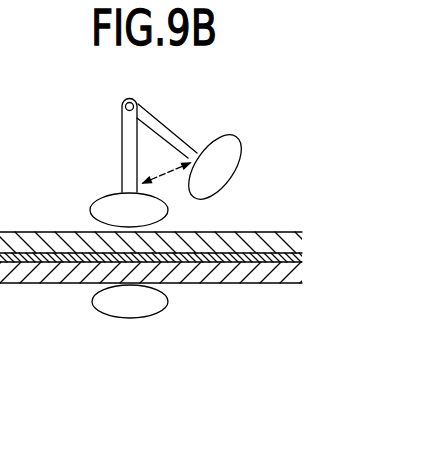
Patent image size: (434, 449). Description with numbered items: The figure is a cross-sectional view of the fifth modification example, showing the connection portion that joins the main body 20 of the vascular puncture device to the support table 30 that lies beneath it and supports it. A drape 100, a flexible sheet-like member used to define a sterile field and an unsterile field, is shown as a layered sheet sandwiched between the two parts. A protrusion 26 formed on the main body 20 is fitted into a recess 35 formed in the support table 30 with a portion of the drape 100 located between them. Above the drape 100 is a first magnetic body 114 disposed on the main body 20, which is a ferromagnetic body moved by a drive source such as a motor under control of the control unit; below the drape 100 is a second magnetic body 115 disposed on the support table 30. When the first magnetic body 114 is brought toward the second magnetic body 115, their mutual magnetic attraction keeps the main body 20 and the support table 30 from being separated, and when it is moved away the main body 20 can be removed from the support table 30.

The drape 100 is at (169, 248).
The main body 20 is at (48, 226).
The recess 35 is at (228, 232).
The support table 30 is at (45, 292).
The protrusion 26 is at (214, 283).
The first magnetic body 114 is at (112, 207).
The second magnetic body 115 is at (115, 305).